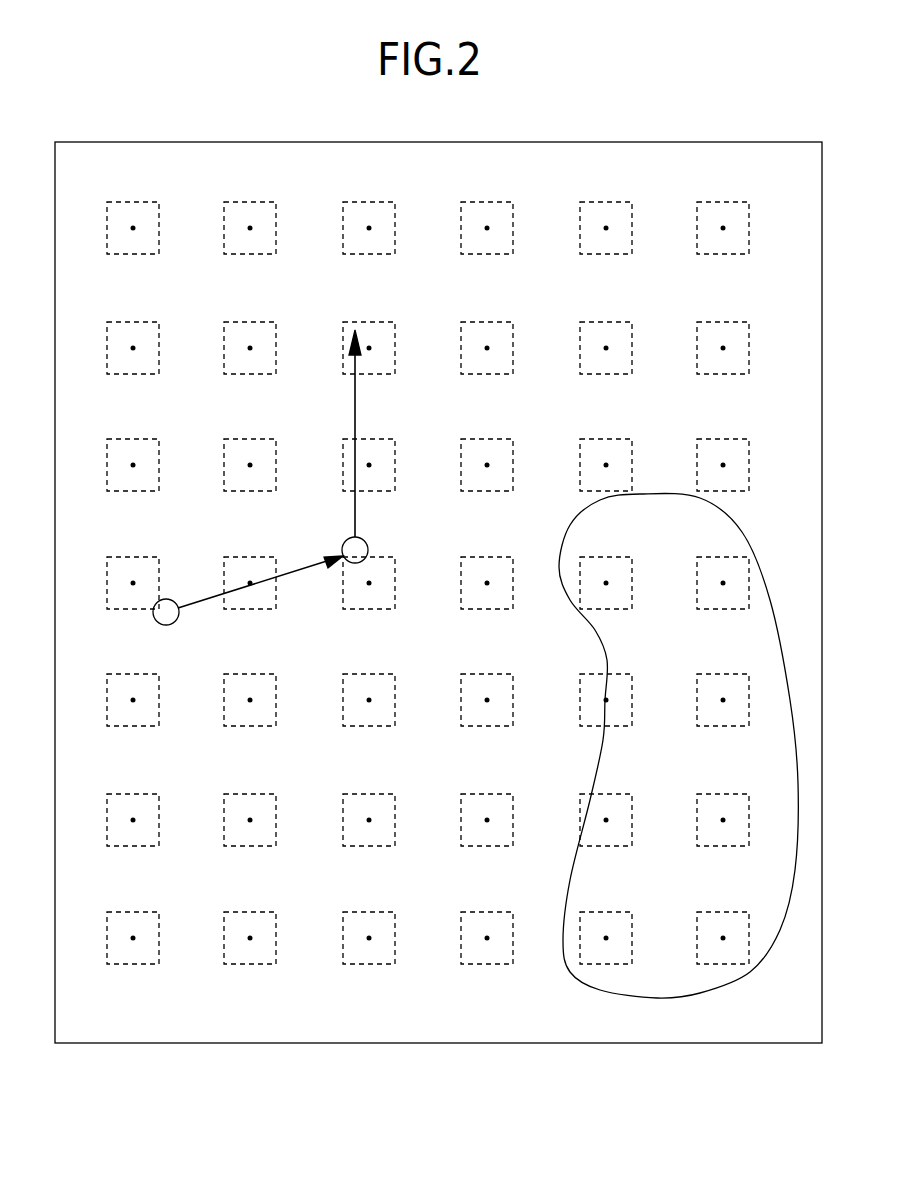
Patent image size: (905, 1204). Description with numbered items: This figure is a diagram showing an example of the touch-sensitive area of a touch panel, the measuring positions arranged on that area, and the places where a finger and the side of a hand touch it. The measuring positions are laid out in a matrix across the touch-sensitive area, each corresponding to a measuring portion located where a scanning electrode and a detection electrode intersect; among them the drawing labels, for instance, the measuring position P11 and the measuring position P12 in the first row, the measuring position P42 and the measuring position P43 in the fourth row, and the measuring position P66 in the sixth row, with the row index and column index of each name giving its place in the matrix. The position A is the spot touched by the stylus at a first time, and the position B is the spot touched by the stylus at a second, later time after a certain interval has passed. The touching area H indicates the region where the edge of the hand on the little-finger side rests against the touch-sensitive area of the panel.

The measuring position P11 is at (133, 226).
The measuring position P12 is at (250, 226).
The measuring position P42 is at (250, 581).
The measuring position P43 is at (369, 585).
The measuring position P66 is at (723, 818).
The position A is at (172, 625).
The position B is at (366, 543).
The touching area H is at (750, 981).